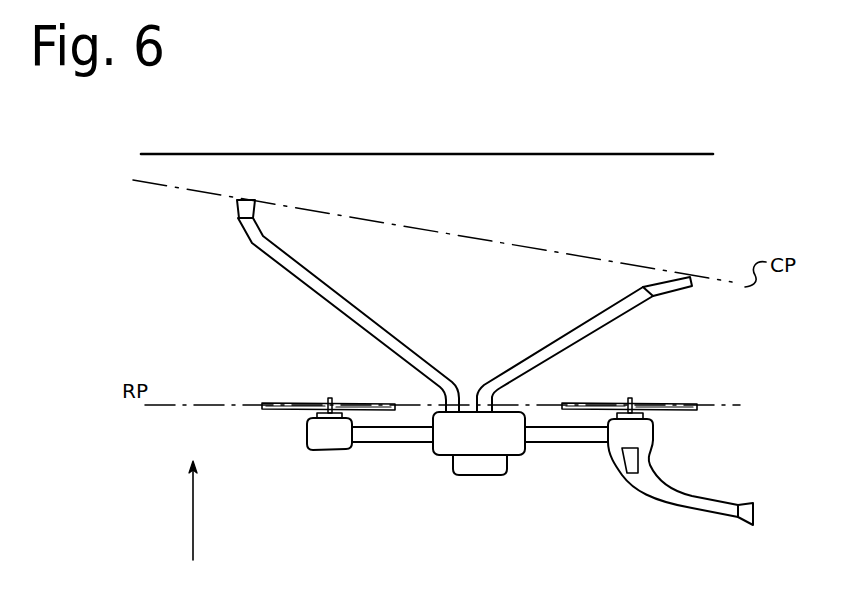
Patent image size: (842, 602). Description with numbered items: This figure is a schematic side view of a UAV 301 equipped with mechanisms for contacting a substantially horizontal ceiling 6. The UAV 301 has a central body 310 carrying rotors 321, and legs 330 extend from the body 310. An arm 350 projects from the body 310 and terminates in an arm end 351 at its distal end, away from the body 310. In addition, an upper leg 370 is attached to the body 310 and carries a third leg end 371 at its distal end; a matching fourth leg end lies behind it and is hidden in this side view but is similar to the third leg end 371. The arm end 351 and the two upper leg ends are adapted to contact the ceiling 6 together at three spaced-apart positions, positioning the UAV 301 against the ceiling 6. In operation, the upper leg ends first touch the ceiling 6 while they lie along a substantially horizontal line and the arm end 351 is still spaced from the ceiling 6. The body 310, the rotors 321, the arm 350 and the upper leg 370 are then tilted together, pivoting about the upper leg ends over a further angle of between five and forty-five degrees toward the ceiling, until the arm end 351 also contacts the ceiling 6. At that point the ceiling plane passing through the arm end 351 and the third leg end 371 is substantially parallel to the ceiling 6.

The ceiling 6 is at (689, 153).
The UAV 301 is at (443, 488).
The body 310 is at (513, 440).
The rotors 321 is at (282, 401).
The legs 330 is at (725, 505).
The arm 350 is at (560, 345).
The arm end 351 is at (678, 280).
The upper leg 370 is at (327, 296).
The third leg end 371 is at (242, 213).